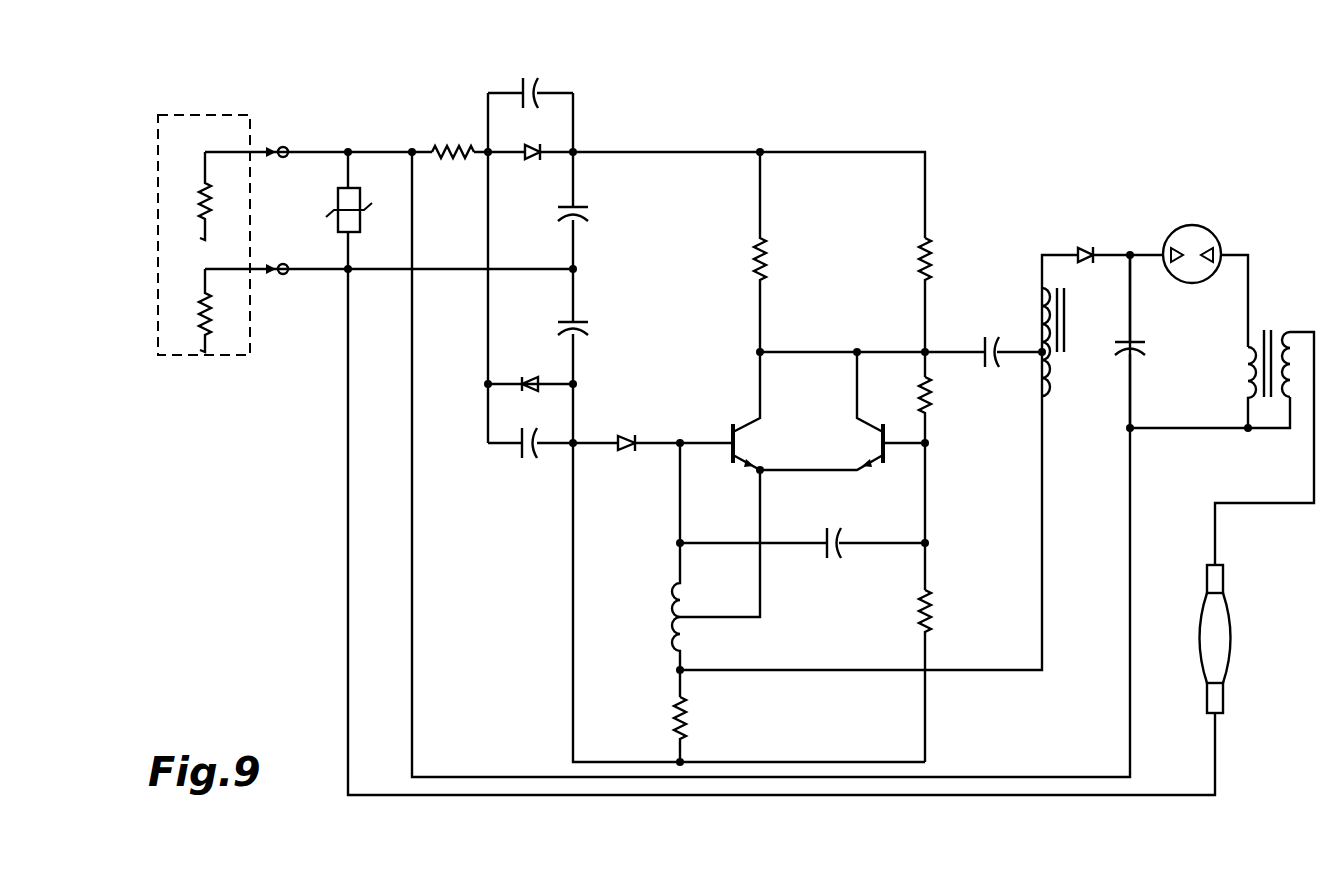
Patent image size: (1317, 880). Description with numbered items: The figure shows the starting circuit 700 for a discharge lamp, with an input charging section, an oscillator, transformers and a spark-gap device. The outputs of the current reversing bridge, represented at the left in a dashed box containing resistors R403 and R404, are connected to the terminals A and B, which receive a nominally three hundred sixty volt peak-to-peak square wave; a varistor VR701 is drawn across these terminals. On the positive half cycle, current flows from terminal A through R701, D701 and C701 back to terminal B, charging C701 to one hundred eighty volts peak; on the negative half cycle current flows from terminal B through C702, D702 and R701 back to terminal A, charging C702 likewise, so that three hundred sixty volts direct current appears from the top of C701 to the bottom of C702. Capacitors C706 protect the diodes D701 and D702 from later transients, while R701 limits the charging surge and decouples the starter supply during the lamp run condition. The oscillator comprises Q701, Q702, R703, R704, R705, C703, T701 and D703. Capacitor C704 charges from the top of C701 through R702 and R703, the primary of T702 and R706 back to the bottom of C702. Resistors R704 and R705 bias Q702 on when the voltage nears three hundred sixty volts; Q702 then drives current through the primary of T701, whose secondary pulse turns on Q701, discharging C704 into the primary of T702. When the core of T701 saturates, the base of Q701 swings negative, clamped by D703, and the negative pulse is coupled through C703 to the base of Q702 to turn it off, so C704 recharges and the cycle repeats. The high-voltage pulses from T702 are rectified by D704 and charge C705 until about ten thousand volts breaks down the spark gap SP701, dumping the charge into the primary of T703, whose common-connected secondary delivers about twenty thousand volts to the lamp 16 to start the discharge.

The resistor R403 is at (199, 195).
The resistor R404 is at (198, 322).
The terminal A is at (282, 147).
The terminal B is at (285, 275).
The varistor VR701 is at (338, 209).
The resistor R701 is at (452, 145).
The capacitor C706 is at (538, 90).
The diode D701 is at (532, 163).
The capacitor C701 is at (592, 213).
The capacitor C702 is at (590, 330).
The diode D702 is at (530, 378).
The diode D703 is at (630, 432).
The resistor R702 is at (770, 256).
The resistor R703 is at (937, 256).
The resistor R704 is at (937, 408).
The resistor R705 is at (937, 612).
The resistor R706 is at (691, 714).
The transistor Q701 is at (748, 440).
The transistor Q702 is at (875, 446).
The capacitor C703 is at (830, 534).
The capacitor C704 is at (984, 336).
The capacitor C705 is at (1144, 347).
The transformer T701 is at (676, 610).
The pulse transformer T702 is at (1067, 305).
The transformer T703 is at (1272, 333).
The diode D704 is at (1087, 245).
The spark gap SP701 is at (1196, 224).
The lamp 16 is at (1236, 612).
The starting circuit 700 is at (997, 165).